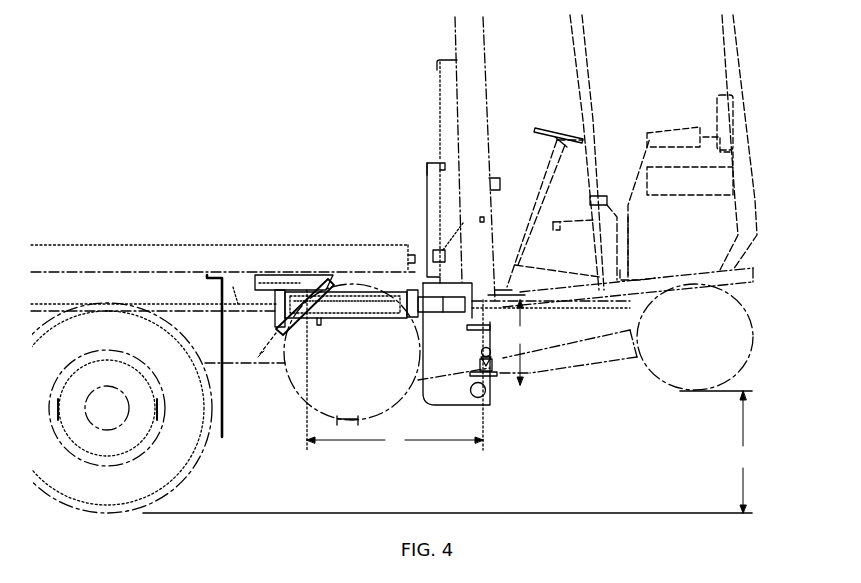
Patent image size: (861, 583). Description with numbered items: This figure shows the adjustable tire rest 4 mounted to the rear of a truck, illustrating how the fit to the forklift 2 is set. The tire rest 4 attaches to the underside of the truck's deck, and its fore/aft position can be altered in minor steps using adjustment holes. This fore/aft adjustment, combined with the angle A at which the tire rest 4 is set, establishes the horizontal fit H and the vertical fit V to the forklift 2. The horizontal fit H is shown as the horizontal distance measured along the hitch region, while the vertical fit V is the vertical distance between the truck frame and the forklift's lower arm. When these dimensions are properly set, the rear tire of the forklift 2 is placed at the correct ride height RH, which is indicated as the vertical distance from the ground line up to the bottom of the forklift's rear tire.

The forklift 2 is at (765, 183).
The tire rest 4 is at (282, 283).
The angle of the tire rests A is at (264, 351).
The horizontal fit H is at (395, 370).
The vertical fit V is at (519, 342).
The ride height RH is at (743, 452).